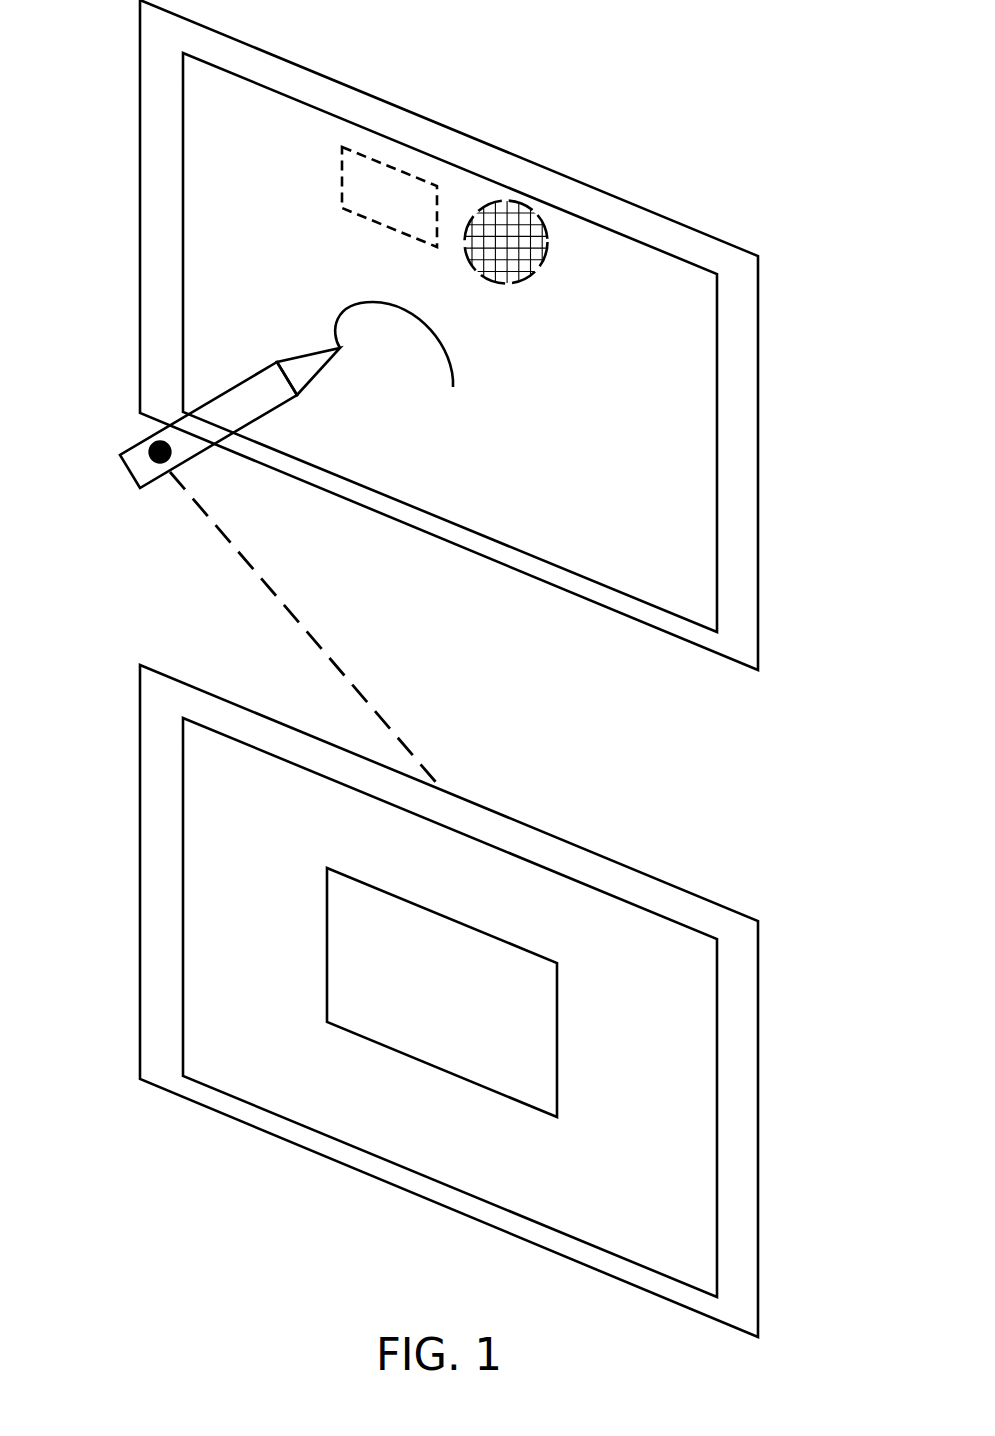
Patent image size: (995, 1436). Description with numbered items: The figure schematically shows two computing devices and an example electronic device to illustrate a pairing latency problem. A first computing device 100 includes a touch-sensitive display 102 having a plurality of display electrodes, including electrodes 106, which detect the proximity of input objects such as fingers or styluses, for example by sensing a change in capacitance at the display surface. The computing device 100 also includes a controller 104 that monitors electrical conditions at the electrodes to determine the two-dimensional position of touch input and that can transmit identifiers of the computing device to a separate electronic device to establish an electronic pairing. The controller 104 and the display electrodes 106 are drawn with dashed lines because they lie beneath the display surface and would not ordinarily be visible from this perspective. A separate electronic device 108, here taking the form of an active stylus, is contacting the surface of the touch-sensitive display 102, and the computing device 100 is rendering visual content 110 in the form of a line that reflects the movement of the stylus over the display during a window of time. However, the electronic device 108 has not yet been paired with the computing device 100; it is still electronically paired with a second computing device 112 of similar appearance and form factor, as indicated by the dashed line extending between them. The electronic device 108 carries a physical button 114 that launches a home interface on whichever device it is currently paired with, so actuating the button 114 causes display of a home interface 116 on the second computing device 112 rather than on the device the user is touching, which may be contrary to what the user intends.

The first computing device 100 is at (520, 78).
The touch-sensitive display 102 is at (182, 140).
The controller 104 is at (408, 208).
The display electrodes 106 is at (532, 213).
The electronic device 108 is at (121, 454).
The visual content 110 is at (337, 316).
The second computing device 112 is at (140, 664).
The physical button 114 is at (150, 455).
The home interface 116 is at (327, 866).